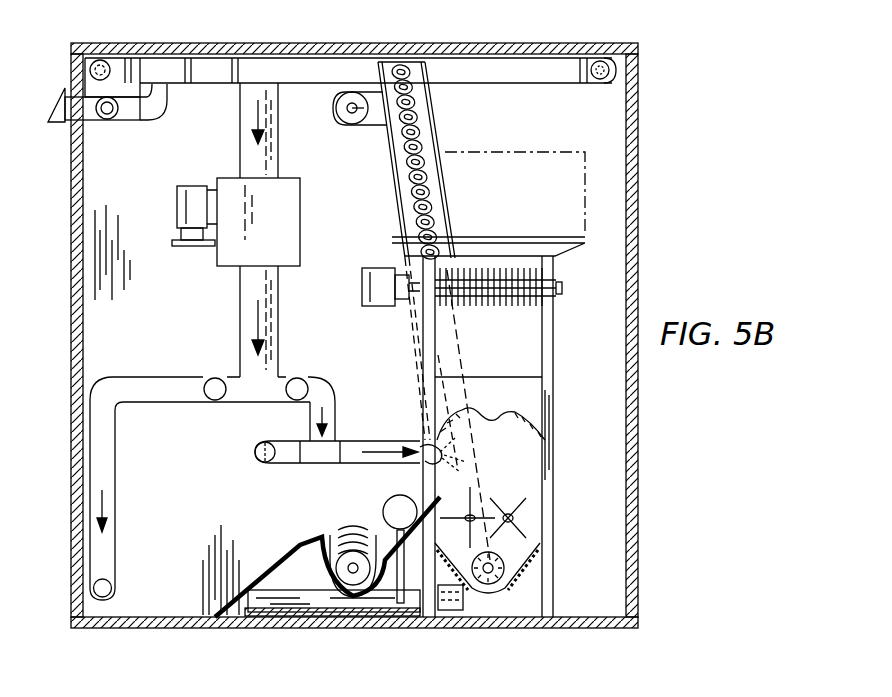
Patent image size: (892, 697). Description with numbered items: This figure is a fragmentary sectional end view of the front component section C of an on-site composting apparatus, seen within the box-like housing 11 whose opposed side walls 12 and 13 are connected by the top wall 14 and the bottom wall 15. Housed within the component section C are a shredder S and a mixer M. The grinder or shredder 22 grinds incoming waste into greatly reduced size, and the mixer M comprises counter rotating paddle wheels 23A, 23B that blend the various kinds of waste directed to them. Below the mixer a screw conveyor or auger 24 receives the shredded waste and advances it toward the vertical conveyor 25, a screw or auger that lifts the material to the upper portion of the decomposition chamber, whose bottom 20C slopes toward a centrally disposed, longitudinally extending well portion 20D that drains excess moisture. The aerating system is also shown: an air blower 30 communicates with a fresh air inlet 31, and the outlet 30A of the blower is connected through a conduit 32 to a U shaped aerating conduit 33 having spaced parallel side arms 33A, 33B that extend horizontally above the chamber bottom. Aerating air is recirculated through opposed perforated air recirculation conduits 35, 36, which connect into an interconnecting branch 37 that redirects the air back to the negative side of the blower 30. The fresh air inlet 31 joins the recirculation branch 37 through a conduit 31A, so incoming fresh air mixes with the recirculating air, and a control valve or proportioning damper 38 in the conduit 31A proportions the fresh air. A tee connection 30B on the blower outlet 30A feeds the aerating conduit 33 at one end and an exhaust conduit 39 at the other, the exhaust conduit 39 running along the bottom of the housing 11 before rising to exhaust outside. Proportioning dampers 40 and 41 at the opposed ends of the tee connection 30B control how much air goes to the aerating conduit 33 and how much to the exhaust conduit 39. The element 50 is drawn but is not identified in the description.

The housing 11 is at (553, 45).
The side wall 12 is at (640, 462).
The side wall 13 is at (70, 420).
The top wall 14 is at (444, 44).
The bottom wall 15 is at (268, 628).
The bottom of the decomposition chamber 20C is at (305, 600).
The well portion 20D is at (358, 600).
The grinder or shredder 22 is at (502, 266).
The paddle wheel 23A is at (528, 513).
The paddle wheel 23B is at (474, 505).
The screw conveyor or auger 24 is at (488, 586).
The vertical conveyor 25 is at (418, 132).
The air blower 30 is at (300, 208).
The outlet of the blower 30A is at (240, 318).
The tee connection 30B is at (257, 404).
The fresh air inlet 31 is at (66, 100).
The conduit 31A is at (150, 123).
The conduit 32 is at (338, 380).
The aerating conduit 33 is at (360, 439).
The side arm 33A is at (432, 450).
The side arm 33B is at (262, 464).
The air recirculation conduit 35 is at (101, 60).
The air recirculation conduit 36 is at (612, 70).
The interconnecting branch 37 is at (330, 72).
The control valve or proportioning damper 38 is at (107, 120).
The exhaust conduit 39 is at (96, 575).
The proportioning damper 40 is at (216, 377).
The proportioning damper 41 is at (297, 377).
The post 50 is at (392, 604).
The component section C is at (595, 274).
The shredder S is at (525, 336).
The mixer M is at (560, 497).